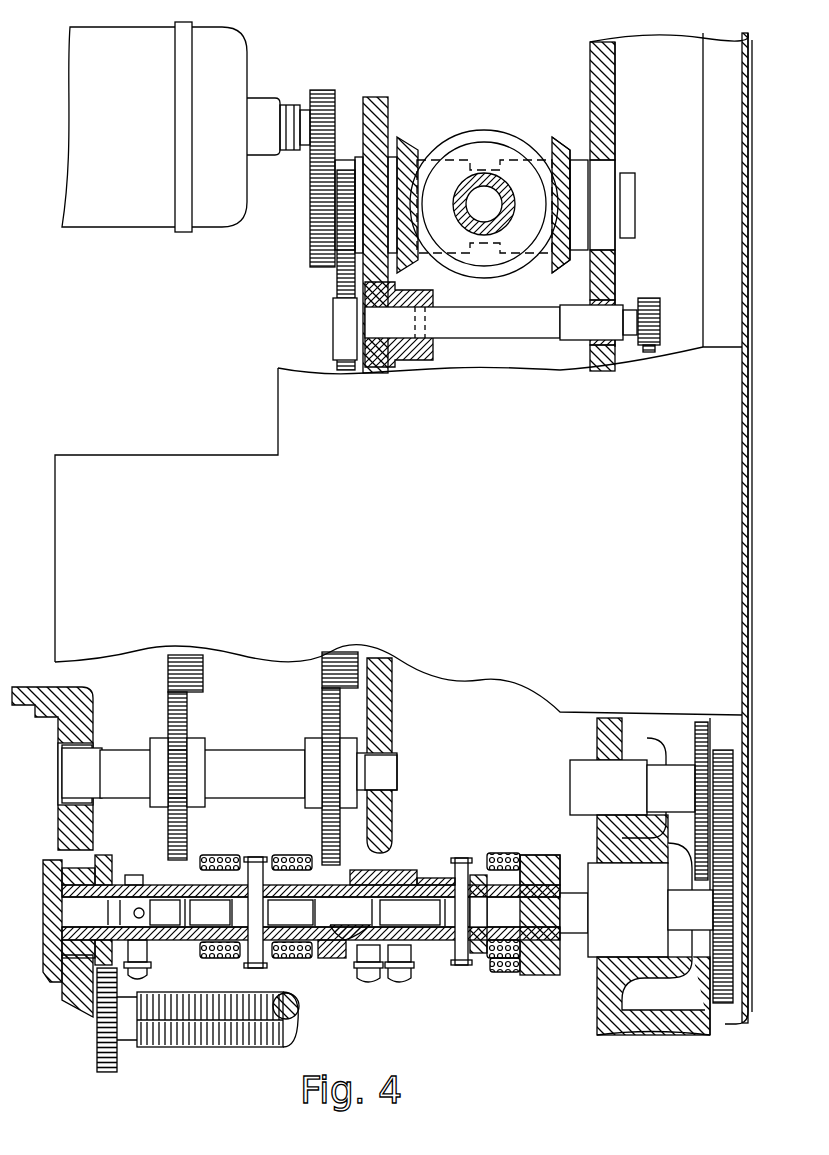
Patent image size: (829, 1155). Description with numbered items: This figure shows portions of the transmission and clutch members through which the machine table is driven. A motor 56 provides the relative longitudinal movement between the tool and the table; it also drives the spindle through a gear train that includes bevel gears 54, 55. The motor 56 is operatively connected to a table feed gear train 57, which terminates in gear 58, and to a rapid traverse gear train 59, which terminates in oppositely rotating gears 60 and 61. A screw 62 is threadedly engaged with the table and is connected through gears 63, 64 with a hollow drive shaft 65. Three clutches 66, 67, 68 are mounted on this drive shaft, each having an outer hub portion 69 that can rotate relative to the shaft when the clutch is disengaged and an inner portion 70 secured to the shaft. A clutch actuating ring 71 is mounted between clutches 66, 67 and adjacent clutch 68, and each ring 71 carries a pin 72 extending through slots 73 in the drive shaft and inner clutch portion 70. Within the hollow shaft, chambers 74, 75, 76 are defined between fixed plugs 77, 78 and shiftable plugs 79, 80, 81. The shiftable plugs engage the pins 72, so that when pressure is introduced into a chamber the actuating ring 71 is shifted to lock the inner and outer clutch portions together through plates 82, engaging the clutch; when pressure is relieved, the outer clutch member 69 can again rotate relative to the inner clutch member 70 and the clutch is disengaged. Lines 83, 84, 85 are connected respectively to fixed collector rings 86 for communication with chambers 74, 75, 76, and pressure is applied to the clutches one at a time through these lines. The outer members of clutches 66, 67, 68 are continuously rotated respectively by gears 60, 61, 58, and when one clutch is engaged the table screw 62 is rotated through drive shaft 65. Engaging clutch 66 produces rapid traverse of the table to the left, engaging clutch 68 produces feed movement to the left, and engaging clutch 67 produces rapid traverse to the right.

The bevel gear 54 is at (402, 140).
The bevel gear 55 is at (452, 132).
The motor 56 is at (108, 228).
The table feed gear train 57 is at (652, 297).
The gear 58 is at (725, 758).
The rapid traverse gear train 59 is at (335, 360).
The gear 60 is at (190, 713).
The gear 61 is at (322, 690).
The screw 62 is at (173, 1048).
The gear 63 is at (97, 1062).
The gear 64 is at (100, 862).
The hollow drive shaft 65 is at (125, 876).
The clutch 66 is at (198, 855).
The clutch 67 is at (305, 855).
The clutch 68 is at (527, 855).
The outer hub portion 69 is at (492, 852).
The inner portion 70 is at (546, 972).
The clutch actuating ring 71 is at (456, 858).
The pin 72 is at (465, 965).
The slot 73 is at (455, 950).
The chamber 74 is at (178, 882).
The chamber 75 is at (322, 958).
The chamber 76 is at (412, 868).
The fixed plug 77 is at (178, 924).
The fixed plug 78 is at (349, 919).
The shiftable plug 79 is at (223, 924).
The shiftable plug 80 is at (302, 924).
The shiftable plug 81 is at (431, 924).
The plate 82 is at (510, 974).
The line 83 is at (362, 985).
The line 84 is at (148, 966).
The line 85 is at (397, 985).
The fixed collector ring 86 is at (112, 876).